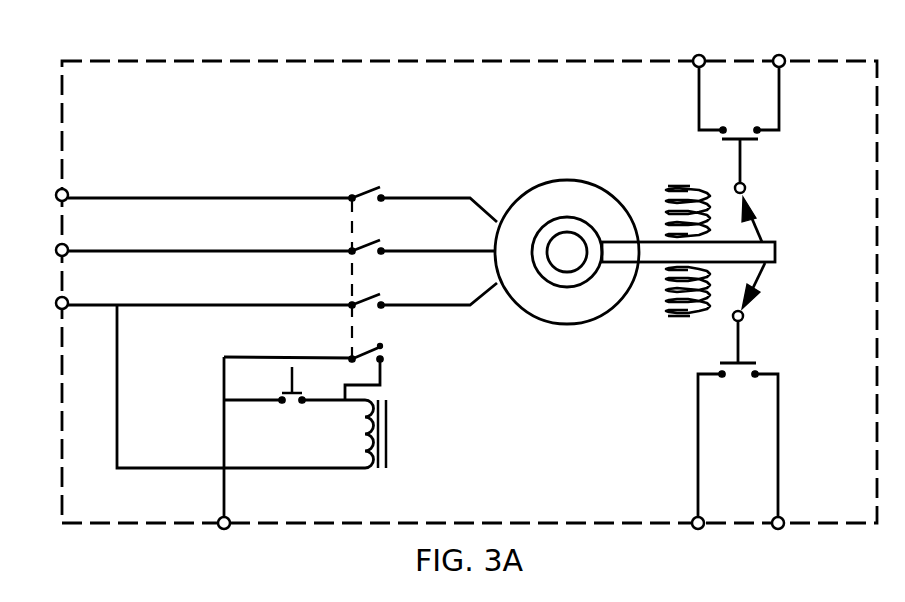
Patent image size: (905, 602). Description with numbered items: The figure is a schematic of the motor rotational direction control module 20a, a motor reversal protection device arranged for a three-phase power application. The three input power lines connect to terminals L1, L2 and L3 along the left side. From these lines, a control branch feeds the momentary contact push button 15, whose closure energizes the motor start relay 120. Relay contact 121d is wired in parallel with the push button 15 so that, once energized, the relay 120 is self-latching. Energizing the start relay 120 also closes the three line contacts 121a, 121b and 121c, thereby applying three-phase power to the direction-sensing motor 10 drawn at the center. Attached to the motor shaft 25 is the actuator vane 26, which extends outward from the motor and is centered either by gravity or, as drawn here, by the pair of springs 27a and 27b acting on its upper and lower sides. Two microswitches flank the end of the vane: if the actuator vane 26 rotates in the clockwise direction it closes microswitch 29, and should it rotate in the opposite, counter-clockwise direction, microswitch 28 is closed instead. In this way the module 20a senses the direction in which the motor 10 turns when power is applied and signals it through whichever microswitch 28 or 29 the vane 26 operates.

The motor rotational direction control module 20a is at (106, 59).
The terminal L1 is at (56, 192).
The terminal L2 is at (56, 246).
The terminal L3 is at (56, 298).
The contact 121a is at (339, 197).
The contact 121b is at (340, 250).
The contact 121c is at (340, 303).
The relay contact 121d is at (340, 357).
The momentary contact push button 15 is at (289, 378).
The motor start relay 120 is at (388, 445).
The three-phase direction-sensing motor 10 is at (547, 181).
The motor shaft 25 is at (566, 256).
The actuator vane 26 is at (660, 240).
The spring 27a is at (689, 184).
The spring 27b is at (684, 320).
The microswitch 28 is at (742, 168).
The microswitch 29 is at (740, 345).